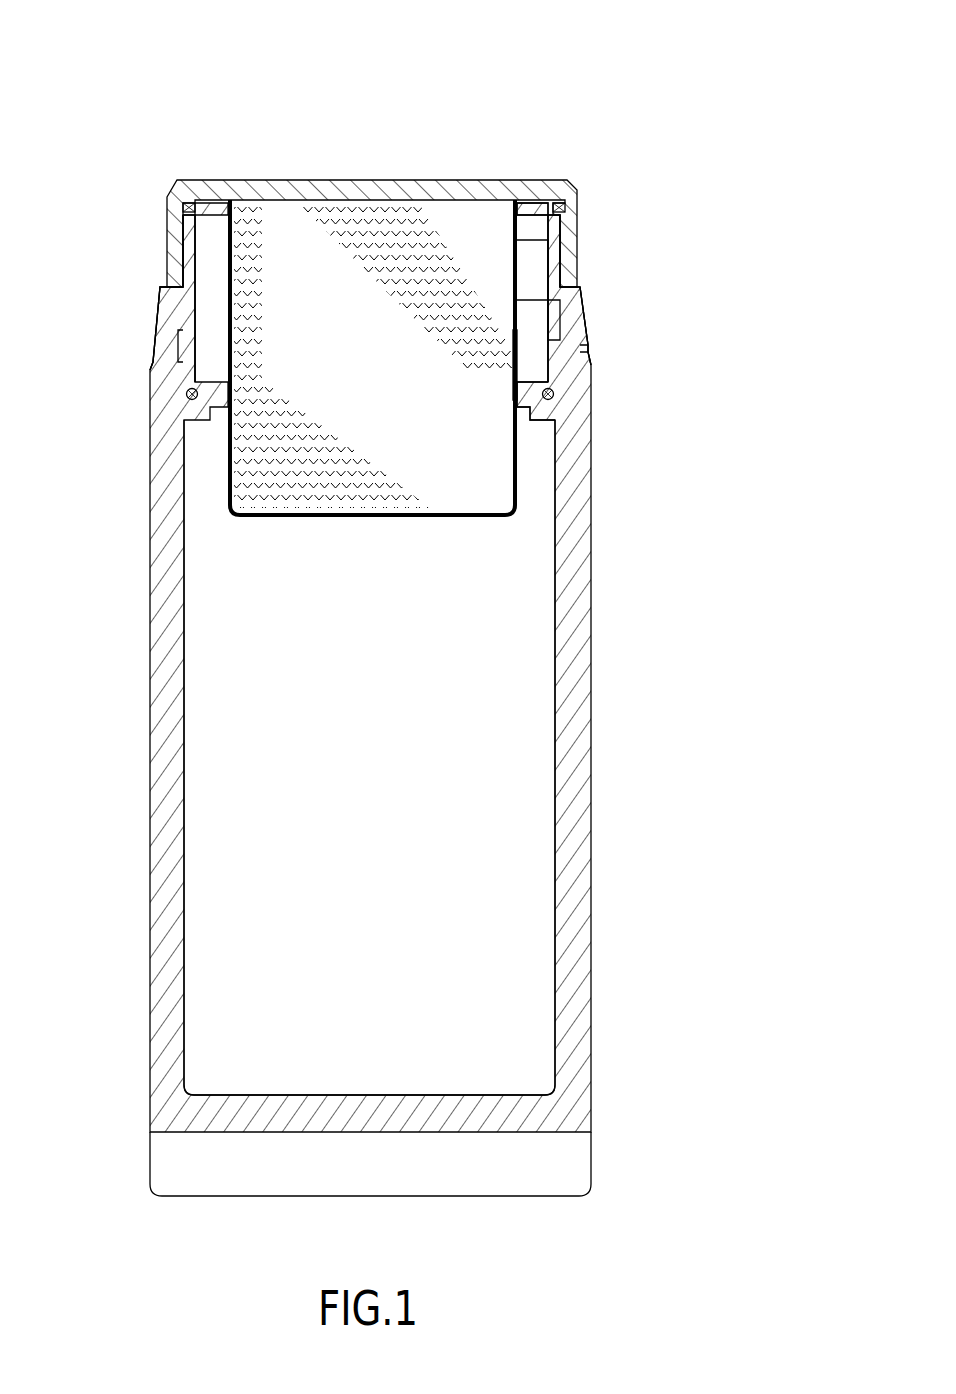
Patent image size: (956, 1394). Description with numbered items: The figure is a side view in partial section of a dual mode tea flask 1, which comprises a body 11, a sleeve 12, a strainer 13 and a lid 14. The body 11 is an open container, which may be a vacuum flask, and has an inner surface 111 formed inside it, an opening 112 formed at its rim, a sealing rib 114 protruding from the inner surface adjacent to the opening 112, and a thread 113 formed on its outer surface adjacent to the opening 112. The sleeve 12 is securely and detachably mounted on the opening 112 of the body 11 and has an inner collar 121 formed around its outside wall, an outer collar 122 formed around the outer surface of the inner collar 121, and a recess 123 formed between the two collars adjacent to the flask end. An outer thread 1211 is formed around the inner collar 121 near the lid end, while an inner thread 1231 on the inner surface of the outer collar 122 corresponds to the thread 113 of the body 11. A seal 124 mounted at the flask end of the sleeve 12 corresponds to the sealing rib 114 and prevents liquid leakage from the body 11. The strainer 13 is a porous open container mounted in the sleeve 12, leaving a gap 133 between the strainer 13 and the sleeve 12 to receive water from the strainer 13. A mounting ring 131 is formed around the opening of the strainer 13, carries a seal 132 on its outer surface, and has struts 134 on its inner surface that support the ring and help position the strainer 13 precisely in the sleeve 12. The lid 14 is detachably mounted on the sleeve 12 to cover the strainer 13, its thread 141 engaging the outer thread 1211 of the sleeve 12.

The dual mode tea flask 1 is at (243, 118).
The body 11 is at (591, 548).
The inner surface 111 is at (528, 626).
The opening 112 is at (546, 335).
The thread 113 is at (580, 352).
The sealing rib 114 is at (552, 410).
The sleeve 12 is at (147, 281).
The inner collar 121 is at (185, 246).
The outer thread 1211 is at (565, 230).
The outer collar 122 is at (578, 300).
The recess 123 is at (181, 336).
The inner thread 1231 is at (182, 354).
The seal 124 is at (188, 395).
The strainer 13 is at (345, 197).
The mounting ring 131 is at (532, 203).
The seal 132 is at (565, 207).
The gap 133 is at (527, 363).
The struts 134 is at (532, 273).
The lid 14 is at (245, 190).
The thread 141 is at (183, 240).